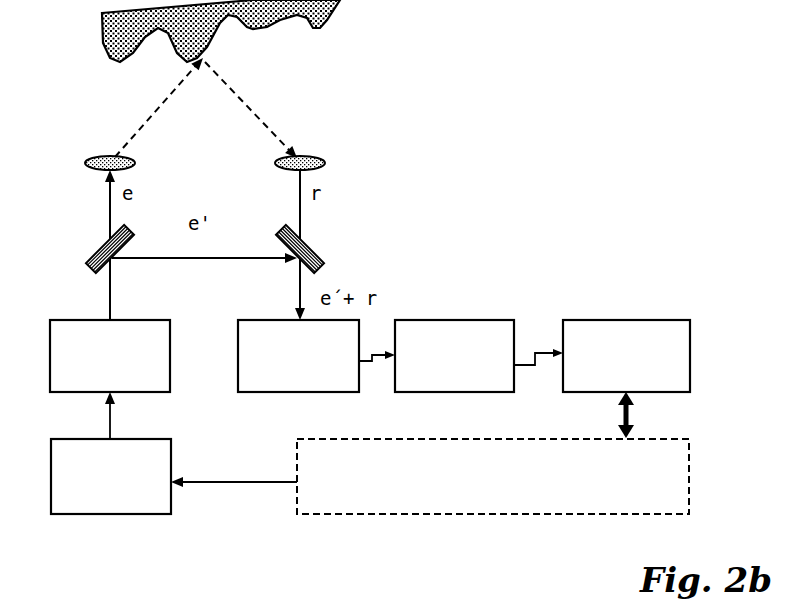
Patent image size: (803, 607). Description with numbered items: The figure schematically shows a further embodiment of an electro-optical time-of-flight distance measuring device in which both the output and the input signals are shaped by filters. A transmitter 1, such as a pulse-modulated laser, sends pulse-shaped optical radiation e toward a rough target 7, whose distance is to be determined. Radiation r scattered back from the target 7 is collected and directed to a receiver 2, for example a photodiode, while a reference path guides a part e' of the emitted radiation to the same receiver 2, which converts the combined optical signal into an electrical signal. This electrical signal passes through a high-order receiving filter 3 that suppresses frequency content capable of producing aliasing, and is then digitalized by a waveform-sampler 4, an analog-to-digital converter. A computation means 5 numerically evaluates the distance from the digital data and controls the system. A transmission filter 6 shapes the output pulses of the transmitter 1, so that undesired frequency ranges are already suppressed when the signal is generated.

The transmitter 1 is at (118, 377).
The receiver 2 is at (306, 377).
The filter 3 is at (462, 377).
The waveform-sampler 4 is at (634, 377).
The computation means 5 is at (502, 495).
The transmission filter 6 is at (118, 495).
The target 7 is at (320, 28).